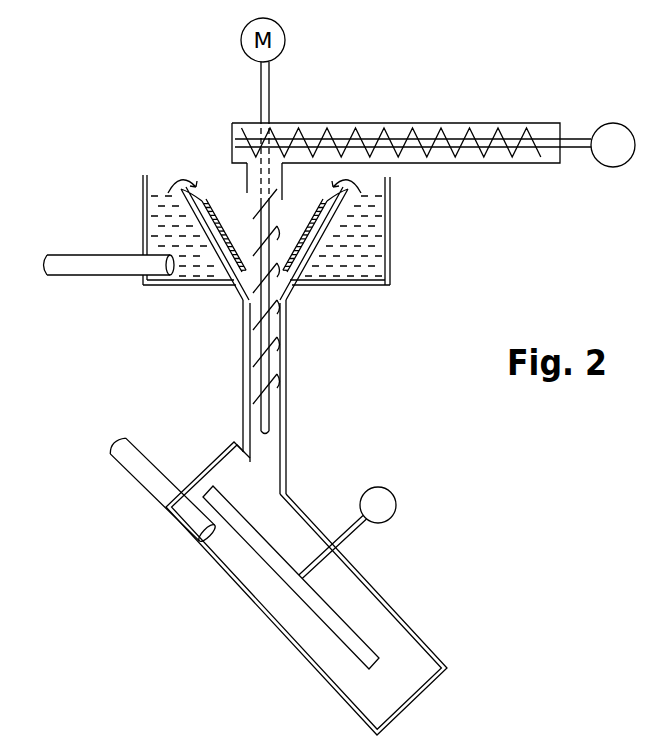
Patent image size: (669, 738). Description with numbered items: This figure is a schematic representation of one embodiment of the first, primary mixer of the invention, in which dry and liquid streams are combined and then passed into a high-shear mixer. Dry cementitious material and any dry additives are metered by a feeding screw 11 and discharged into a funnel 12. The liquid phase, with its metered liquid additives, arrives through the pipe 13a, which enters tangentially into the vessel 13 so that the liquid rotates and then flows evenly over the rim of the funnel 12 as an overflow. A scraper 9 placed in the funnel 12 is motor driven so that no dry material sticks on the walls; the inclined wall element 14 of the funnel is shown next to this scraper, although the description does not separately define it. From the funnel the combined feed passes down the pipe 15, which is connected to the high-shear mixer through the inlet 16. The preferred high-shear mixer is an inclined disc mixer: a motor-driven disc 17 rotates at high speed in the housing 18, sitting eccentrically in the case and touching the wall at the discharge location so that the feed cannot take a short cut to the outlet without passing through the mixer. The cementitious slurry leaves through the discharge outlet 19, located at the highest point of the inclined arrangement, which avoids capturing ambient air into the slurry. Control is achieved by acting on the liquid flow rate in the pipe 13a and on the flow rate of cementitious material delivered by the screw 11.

The scraper 9 is at (308, 240).
The screw 11 is at (395, 122).
The funnel 12 is at (210, 283).
The vessel 13 is at (143, 200).
The pipe 13a is at (80, 266).
The inclined feed tube 14 is at (213, 214).
The pipe 15 is at (285, 322).
The inlet 16 is at (268, 478).
The motor-driven disc 17 is at (337, 612).
The housing 18 is at (437, 650).
The discharge outlet 19 is at (143, 474).